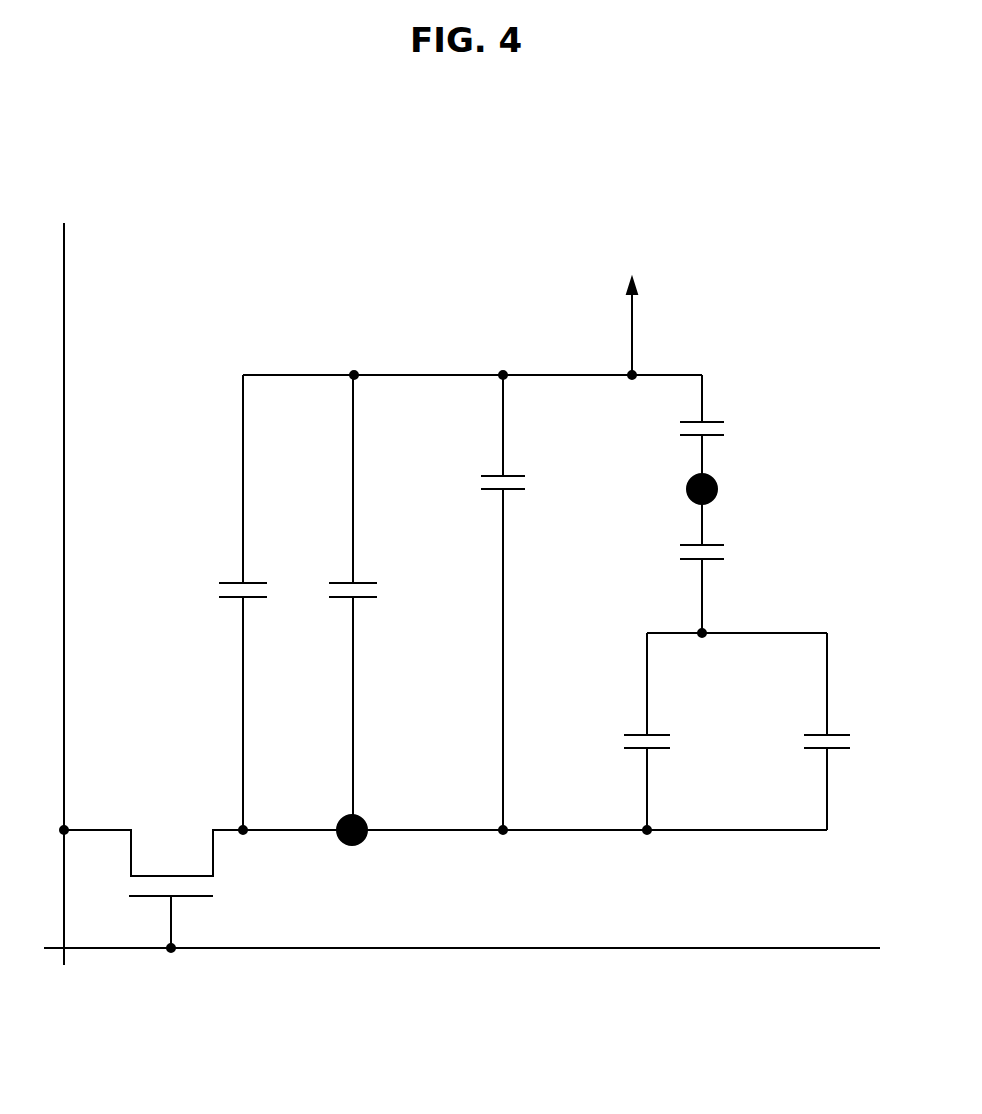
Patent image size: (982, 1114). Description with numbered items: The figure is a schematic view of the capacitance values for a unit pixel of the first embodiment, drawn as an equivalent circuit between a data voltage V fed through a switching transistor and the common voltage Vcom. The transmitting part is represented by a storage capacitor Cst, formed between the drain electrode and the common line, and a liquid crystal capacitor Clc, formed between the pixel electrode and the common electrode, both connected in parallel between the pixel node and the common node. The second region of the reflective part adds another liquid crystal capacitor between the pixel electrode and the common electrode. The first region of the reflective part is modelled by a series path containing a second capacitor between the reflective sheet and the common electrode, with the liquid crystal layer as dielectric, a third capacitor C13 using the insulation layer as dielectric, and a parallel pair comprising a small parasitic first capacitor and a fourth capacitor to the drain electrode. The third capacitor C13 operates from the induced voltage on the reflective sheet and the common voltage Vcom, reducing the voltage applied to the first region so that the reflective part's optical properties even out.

The data voltage V is at (64, 577).
The common voltage Vcom is at (472, 314).
The storage capacitor Cst is at (215, 602).
The liquid crystal capacitor Clc is at (374, 602).
The third capacitor C13 is at (676, 570).